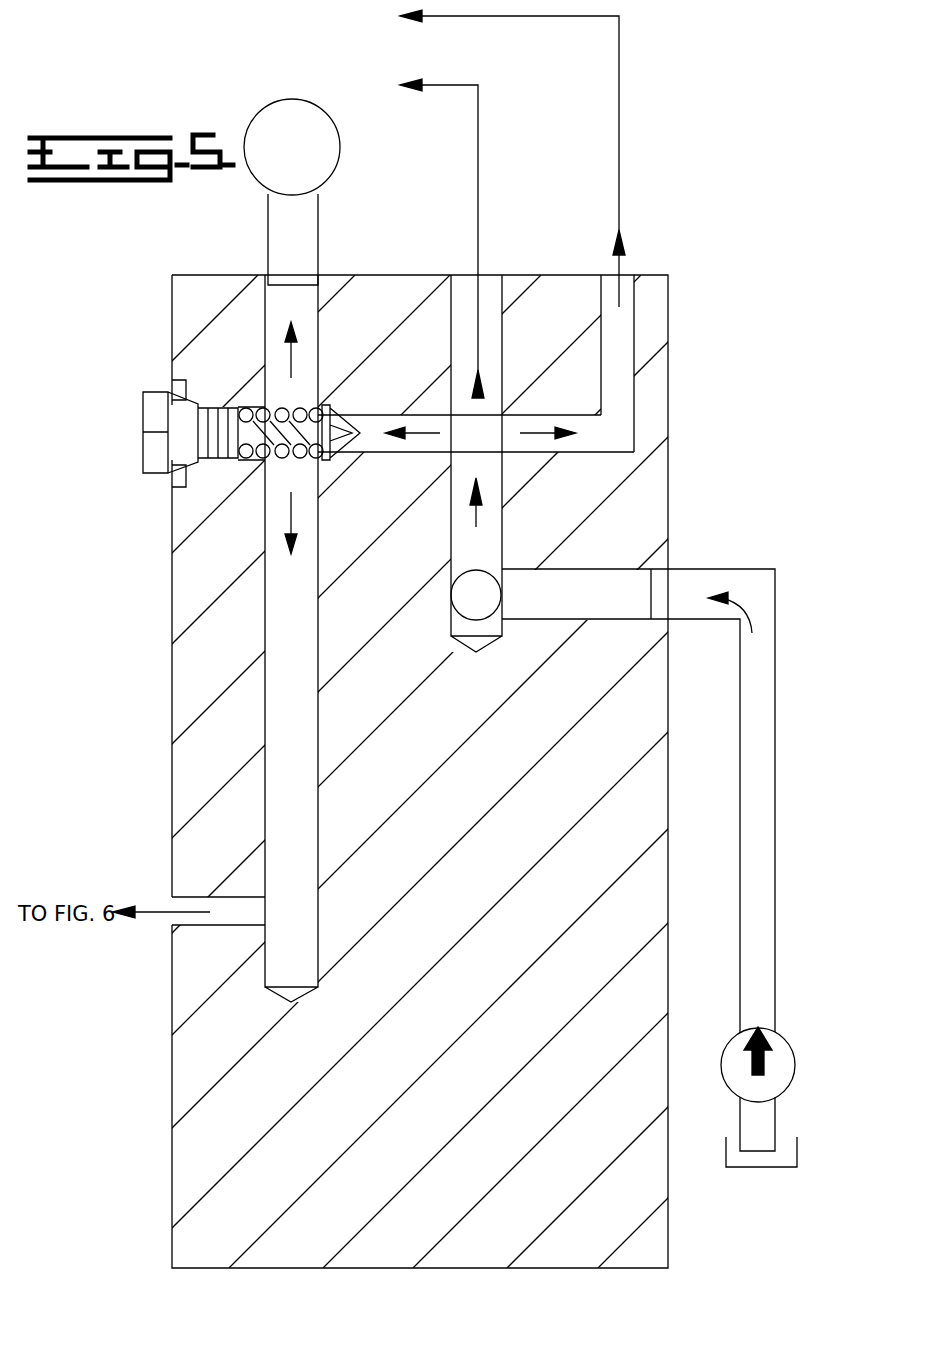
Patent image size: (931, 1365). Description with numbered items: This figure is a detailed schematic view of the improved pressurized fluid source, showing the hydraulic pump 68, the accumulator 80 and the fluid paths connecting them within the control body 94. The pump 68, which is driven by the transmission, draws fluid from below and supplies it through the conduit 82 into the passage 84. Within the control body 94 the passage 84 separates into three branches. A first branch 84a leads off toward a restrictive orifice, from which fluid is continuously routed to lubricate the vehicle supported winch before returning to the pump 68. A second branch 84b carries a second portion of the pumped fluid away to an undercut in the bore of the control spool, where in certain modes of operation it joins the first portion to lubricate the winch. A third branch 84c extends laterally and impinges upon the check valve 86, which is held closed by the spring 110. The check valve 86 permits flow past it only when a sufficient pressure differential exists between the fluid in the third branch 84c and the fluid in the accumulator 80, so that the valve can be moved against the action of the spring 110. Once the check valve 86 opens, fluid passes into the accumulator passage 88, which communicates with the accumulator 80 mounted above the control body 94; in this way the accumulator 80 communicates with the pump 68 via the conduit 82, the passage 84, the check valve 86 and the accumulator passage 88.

The hydraulic pump 68 is at (775, 1048).
The accumulator 80 is at (312, 117).
The conduit 82 is at (712, 572).
The passage 84 is at (490, 533).
The first branch 84a is at (619, 172).
The second branch 84b is at (478, 142).
The third branch 84c is at (380, 417).
The check valve 86 is at (343, 452).
The accumulator passage 88 is at (312, 347).
The control body 94 is at (443, 758).
The spring 110 is at (264, 412).